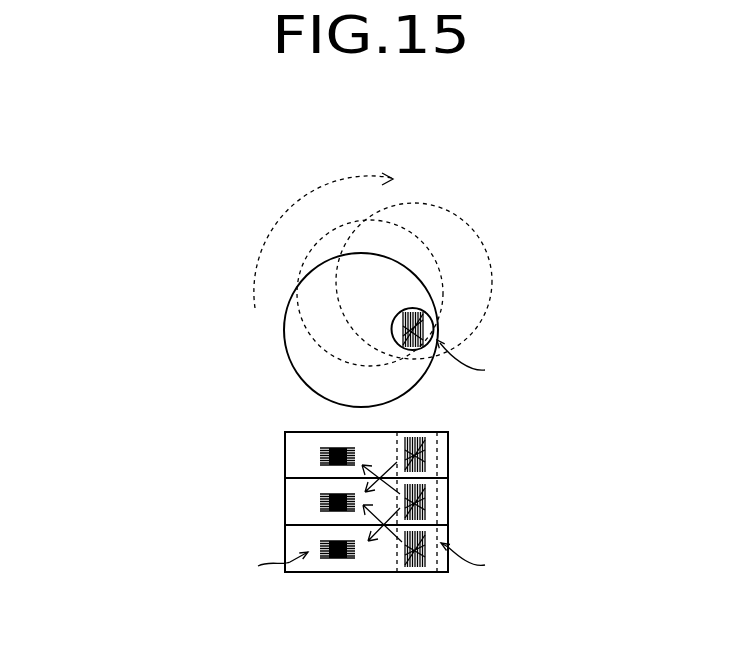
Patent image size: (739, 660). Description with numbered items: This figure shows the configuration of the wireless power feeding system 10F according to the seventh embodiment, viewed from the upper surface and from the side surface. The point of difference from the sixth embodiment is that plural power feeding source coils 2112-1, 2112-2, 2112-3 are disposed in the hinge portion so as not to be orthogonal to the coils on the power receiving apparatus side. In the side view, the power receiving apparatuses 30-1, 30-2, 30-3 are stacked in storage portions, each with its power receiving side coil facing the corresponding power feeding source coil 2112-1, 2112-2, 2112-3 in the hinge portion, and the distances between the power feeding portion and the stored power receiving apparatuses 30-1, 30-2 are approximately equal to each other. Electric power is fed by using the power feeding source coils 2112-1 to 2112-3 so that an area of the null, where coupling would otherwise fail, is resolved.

The wireless power feeding system 10F is at (390, 120).
The power receiving apparatus 30-1 is at (338, 447).
The power receiving apparatus 30-2 is at (320, 495).
The power receiving side coil 30-3 is at (338, 558).
The power feeding source coil 2112-1 is at (425, 455).
The power feeding source coil 2112-2 is at (425, 502).
The power feeding source coil 2112-3 is at (415, 565).